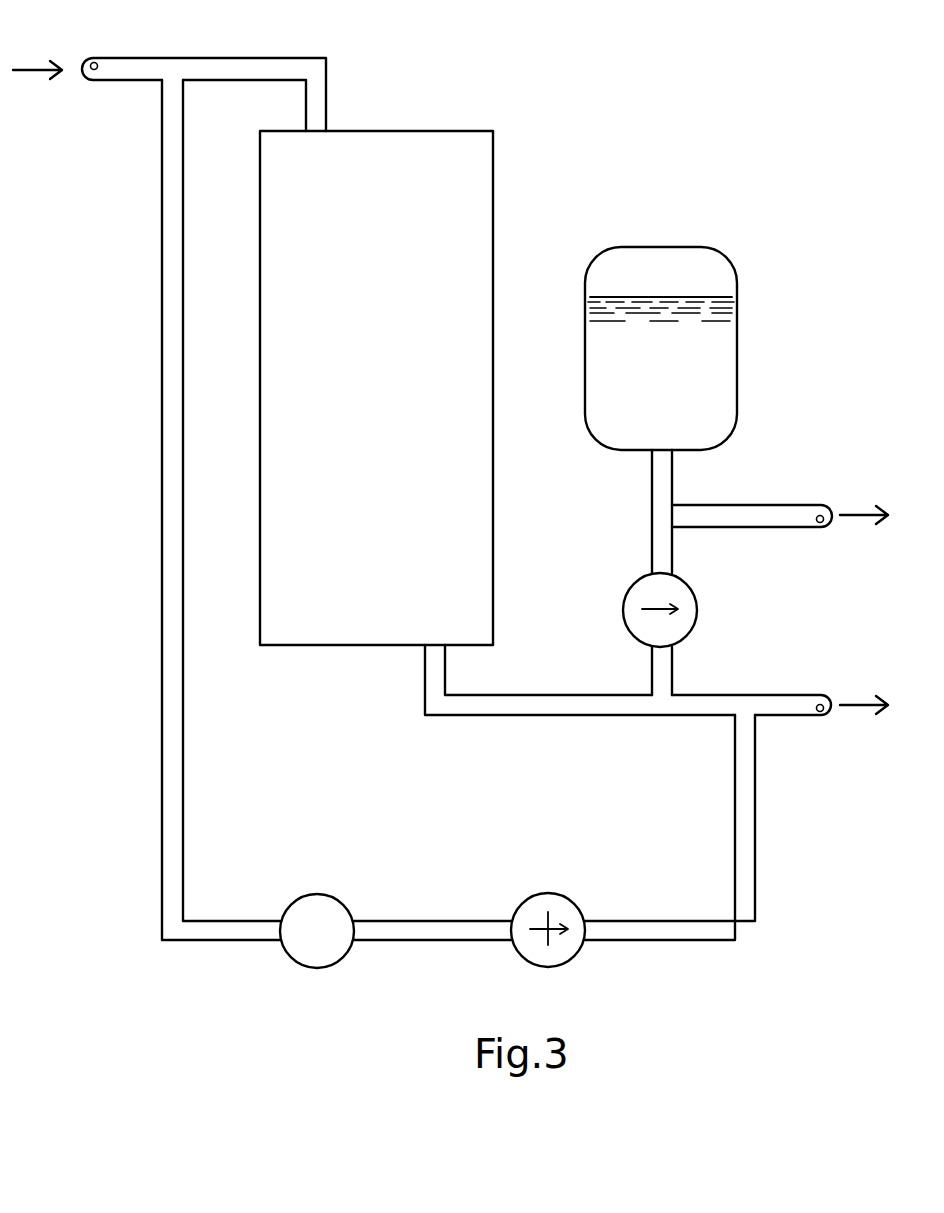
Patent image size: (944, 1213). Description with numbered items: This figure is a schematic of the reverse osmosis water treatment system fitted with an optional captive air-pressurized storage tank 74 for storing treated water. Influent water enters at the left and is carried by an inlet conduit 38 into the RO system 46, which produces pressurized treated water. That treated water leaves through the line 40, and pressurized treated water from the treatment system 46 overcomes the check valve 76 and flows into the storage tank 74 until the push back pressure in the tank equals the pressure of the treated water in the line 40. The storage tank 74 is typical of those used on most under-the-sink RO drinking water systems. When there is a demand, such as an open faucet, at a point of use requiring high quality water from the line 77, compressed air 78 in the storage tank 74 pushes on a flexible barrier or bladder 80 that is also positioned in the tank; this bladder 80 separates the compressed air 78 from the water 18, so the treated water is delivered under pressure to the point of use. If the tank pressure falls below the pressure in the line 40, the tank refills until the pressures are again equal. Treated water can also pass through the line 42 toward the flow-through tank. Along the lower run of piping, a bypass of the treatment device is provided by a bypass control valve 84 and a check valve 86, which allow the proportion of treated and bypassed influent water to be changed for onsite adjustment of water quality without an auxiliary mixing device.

The inlet conduit 38 is at (318, 92).
The RO system 46 is at (388, 378).
The line 42 is at (791, 705).
The line 40 is at (452, 706).
The captive air-pressurized storage tank 74 is at (585, 372).
The compressed air 78 is at (675, 258).
The flexible barrier or bladder 80 is at (722, 311).
The water 18 is at (710, 352).
The line 77 is at (790, 515).
The check valve 76 is at (692, 632).
The bypass control valve 84 is at (325, 968).
The check valve 86 is at (568, 960).